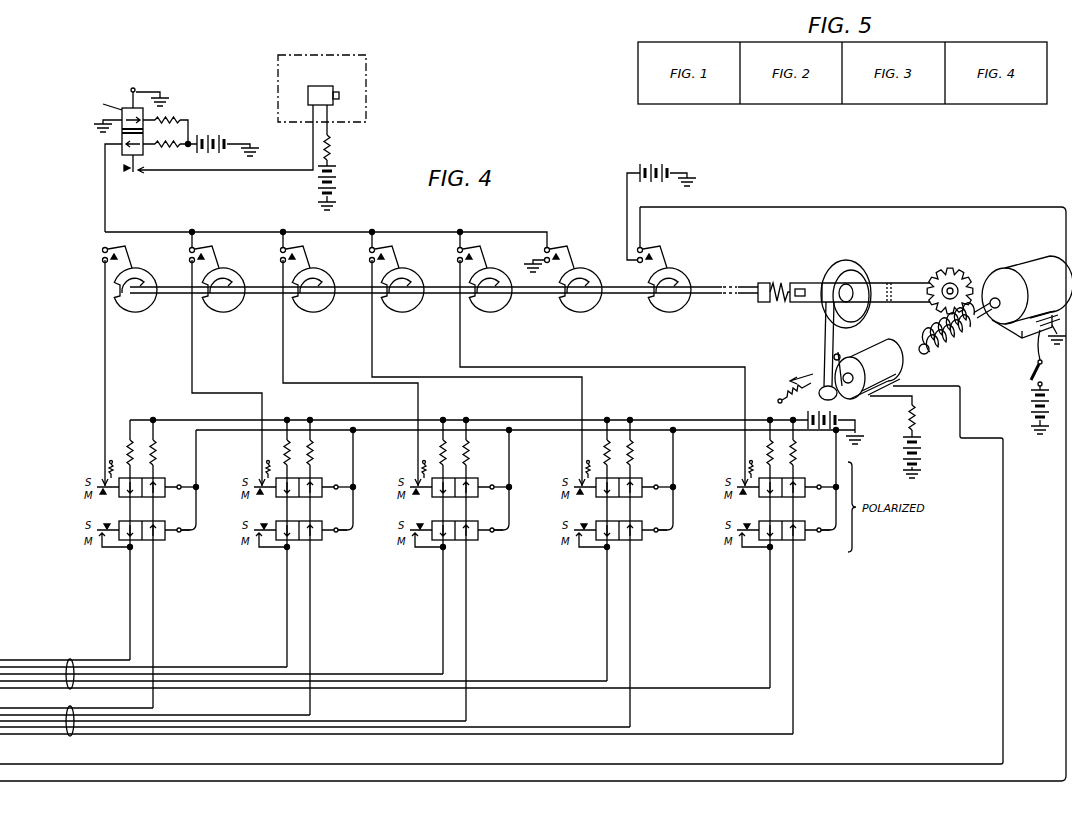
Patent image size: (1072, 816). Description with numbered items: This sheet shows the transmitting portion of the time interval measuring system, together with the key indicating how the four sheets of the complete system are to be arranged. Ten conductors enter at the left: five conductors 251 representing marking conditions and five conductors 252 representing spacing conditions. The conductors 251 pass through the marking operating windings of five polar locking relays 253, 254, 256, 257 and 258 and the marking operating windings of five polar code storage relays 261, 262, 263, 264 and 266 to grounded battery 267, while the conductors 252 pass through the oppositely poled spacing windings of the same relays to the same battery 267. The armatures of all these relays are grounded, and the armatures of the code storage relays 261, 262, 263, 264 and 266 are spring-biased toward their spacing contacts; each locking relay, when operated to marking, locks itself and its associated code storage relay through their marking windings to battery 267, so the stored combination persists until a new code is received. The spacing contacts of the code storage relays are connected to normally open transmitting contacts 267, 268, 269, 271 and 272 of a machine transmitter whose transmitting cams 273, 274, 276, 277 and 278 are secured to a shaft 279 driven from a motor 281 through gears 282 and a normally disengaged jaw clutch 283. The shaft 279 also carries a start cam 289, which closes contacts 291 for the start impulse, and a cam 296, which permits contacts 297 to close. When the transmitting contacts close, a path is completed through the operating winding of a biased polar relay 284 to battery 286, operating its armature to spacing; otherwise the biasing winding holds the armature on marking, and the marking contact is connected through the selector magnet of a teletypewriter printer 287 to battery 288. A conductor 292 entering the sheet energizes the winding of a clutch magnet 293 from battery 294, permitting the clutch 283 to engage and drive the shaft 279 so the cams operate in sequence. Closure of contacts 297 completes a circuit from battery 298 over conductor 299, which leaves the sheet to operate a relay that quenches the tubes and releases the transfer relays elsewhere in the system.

The conductors 251 is at (68, 660).
The conductors 252 is at (68, 707).
The polar locking relay 253 is at (159, 541).
The polar locking relay 254 is at (316, 541).
The polar locking relay 256 is at (472, 541).
The polar locking relay 257 is at (636, 541).
The polar locking relay 258 is at (799, 541).
The polar code storage relay 261 is at (158, 478).
The polar code storage relay 262 is at (315, 478).
The polar code storage relay 263 is at (471, 478).
The polar code storage relay 264 is at (635, 478).
The polar code storage relay 266 is at (798, 478).
The grounded battery 267 is at (129, 248).
The transmitting contacts 268 is at (216, 248).
The transmitting contacts 269 is at (307, 248).
The transmitting contacts 271 is at (397, 248).
The transmitting contacts 272 is at (485, 248).
The transmitting cam 273 is at (131, 308).
The transmitting cam 274 is at (219, 308).
The transmitting cam 276 is at (309, 308).
The transmitting cam 277 is at (398, 308).
The transmitting cam 278 is at (486, 308).
The shaft 279 is at (702, 287).
The motor 281 is at (1016, 258).
The gears 282 is at (928, 310).
The jaw clutch 283 is at (889, 283).
The biased polar relay 284 is at (122, 141).
The battery 286 is at (212, 138).
The teletypewriter printer 287 is at (366, 109).
The battery 288 is at (320, 183).
The start cam 289 is at (597, 307).
The contacts 291 is at (550, 249).
The conductor 292 is at (313, 764).
The clutch magnet 293 is at (857, 352).
The battery 294 is at (921, 452).
The cam 296 is at (684, 307).
The contacts 297 is at (645, 249).
The battery 298 is at (651, 170).
The conductor 299 is at (812, 206).